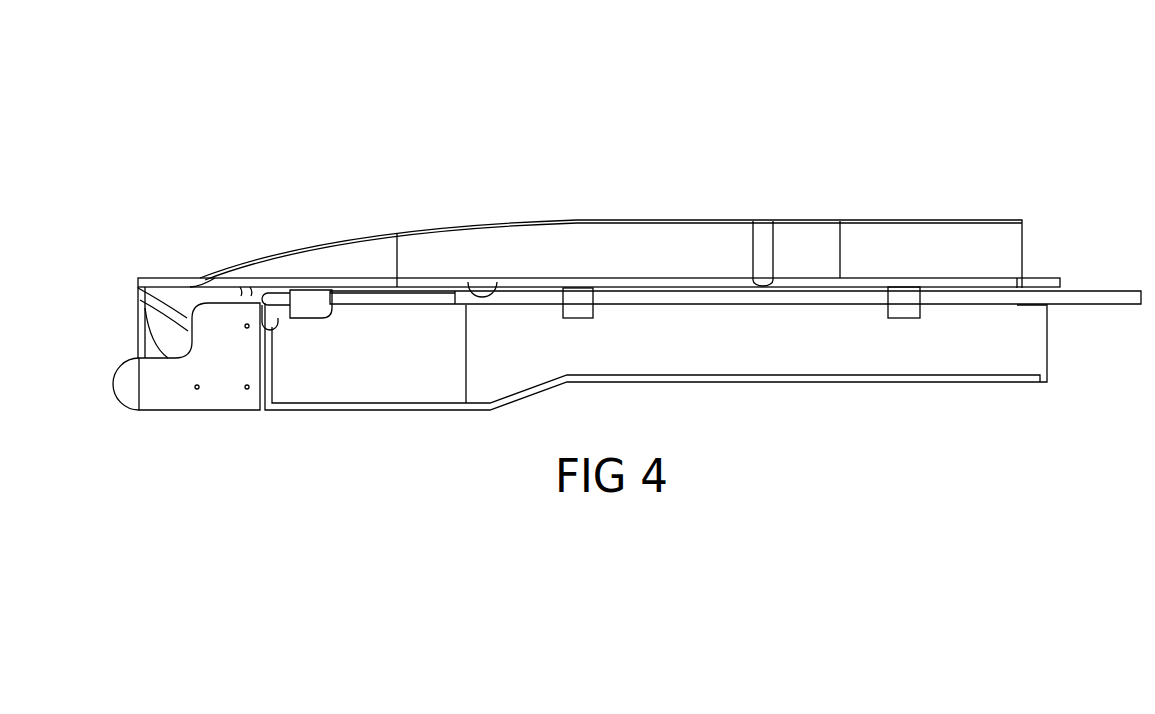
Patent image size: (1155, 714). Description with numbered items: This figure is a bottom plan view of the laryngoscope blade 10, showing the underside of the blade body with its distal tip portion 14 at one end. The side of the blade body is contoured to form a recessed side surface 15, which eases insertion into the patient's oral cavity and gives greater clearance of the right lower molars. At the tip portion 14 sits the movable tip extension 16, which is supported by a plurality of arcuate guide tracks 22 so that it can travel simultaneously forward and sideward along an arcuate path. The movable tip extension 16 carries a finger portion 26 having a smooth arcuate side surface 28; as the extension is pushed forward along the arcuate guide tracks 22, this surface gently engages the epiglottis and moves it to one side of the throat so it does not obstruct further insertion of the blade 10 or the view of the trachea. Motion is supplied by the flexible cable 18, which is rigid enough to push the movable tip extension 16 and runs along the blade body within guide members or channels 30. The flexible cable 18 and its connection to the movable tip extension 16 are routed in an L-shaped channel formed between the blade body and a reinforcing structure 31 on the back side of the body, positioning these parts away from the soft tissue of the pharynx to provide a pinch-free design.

The laryngoscope blade 10 is at (668, 128).
The tip portion 14 is at (143, 285).
The recessed side surface 15 is at (697, 383).
The movable tip extension 16 is at (162, 397).
The flexible cable 18 is at (793, 300).
The arcuate guide tracks 22 is at (177, 313).
The finger portion 26 is at (132, 367).
The smooth arcuate side surface 28 is at (147, 327).
The guide members or channels 30 is at (578, 300).
The reinforcing structure 31 is at (468, 284).